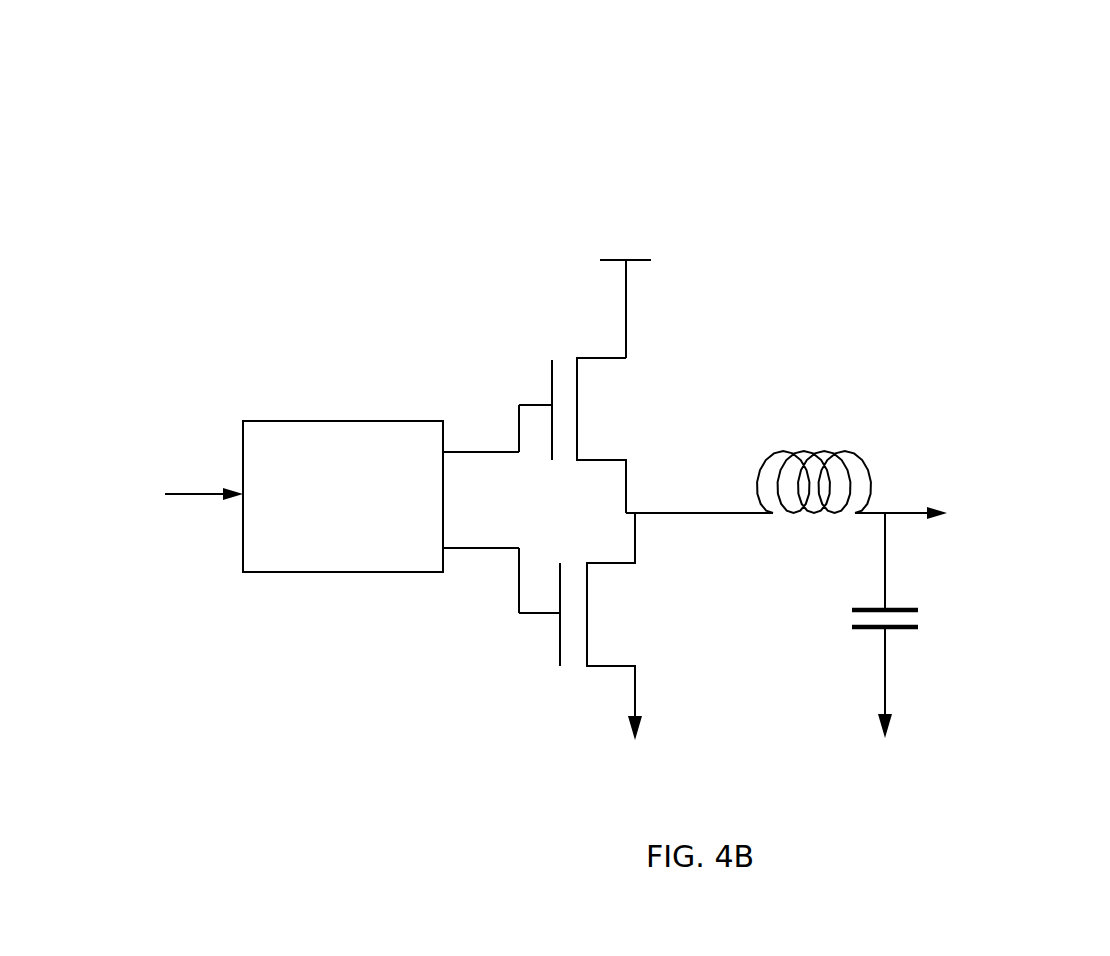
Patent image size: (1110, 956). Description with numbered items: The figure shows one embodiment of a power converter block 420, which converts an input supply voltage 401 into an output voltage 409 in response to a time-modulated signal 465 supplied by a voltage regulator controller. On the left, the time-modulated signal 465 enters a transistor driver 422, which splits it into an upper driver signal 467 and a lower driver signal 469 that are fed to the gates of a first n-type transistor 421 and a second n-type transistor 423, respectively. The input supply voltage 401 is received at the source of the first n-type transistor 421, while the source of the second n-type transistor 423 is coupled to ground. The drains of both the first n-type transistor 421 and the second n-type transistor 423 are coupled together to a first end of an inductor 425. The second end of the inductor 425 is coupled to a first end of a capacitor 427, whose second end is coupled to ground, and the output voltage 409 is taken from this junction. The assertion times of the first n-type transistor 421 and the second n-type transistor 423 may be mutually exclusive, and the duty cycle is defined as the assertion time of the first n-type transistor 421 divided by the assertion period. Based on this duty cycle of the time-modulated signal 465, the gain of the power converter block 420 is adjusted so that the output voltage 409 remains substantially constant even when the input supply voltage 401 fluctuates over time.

The power converter block 420 is at (644, 138).
The input supply voltage 401 is at (620, 274).
The first n-type transistor 421 is at (668, 368).
The second n-type transistor 423 is at (654, 623).
The inductor 425 is at (814, 402).
The capacitor 427 is at (968, 617).
The output voltage 409 is at (939, 479).
The transistor driver 422 is at (343, 496).
The time-modulated signal 465 is at (165, 440).
The upper driver signal 467 is at (478, 406).
The lower driver signal 469 is at (479, 612).